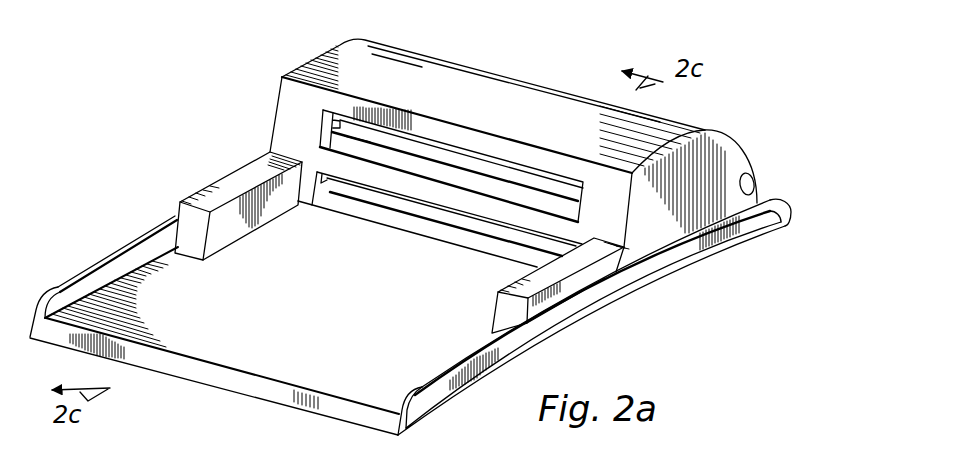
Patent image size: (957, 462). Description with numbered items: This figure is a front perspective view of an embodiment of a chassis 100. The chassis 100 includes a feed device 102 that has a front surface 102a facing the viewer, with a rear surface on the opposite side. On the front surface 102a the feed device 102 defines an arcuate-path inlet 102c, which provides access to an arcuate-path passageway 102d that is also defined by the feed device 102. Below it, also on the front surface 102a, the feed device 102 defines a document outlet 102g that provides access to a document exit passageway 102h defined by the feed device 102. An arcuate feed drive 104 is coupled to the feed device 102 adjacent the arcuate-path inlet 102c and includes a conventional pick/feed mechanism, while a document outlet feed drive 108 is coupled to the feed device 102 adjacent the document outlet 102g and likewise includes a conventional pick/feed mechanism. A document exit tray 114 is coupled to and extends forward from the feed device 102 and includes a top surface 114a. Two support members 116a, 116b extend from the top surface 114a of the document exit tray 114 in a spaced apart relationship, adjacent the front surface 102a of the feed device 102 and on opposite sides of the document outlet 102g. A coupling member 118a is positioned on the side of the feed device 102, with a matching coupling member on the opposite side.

The chassis 100 is at (107, 150).
The feed device 102 is at (438, 74).
The front surface 102a is at (290, 118).
The arcuate-path inlet 102c is at (488, 160).
The arcuate-path passageway 102d is at (386, 139).
The document outlet 102g is at (494, 228).
The document exit passageway 102h is at (440, 214).
The arcuate feed drive 104 is at (537, 177).
The document outlet feed drive 108 is at (546, 252).
The document exit tray 114 is at (235, 388).
The top surface 114a is at (309, 335).
The support member 116a is at (228, 188).
The support member 116b is at (562, 272).
The coupling member 118a is at (756, 182).